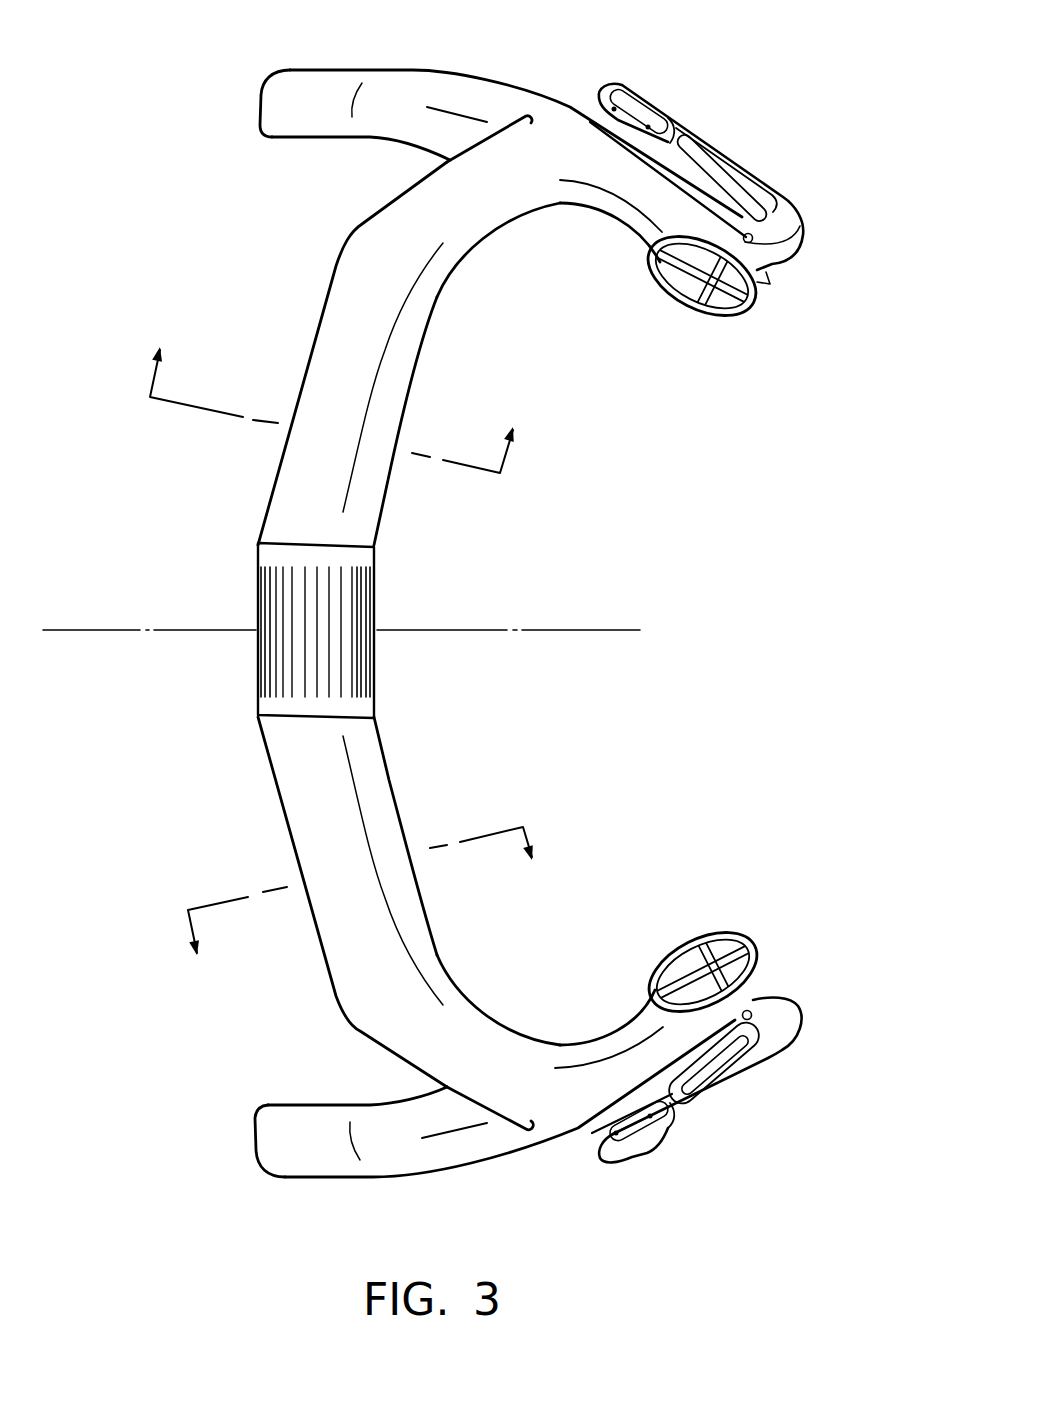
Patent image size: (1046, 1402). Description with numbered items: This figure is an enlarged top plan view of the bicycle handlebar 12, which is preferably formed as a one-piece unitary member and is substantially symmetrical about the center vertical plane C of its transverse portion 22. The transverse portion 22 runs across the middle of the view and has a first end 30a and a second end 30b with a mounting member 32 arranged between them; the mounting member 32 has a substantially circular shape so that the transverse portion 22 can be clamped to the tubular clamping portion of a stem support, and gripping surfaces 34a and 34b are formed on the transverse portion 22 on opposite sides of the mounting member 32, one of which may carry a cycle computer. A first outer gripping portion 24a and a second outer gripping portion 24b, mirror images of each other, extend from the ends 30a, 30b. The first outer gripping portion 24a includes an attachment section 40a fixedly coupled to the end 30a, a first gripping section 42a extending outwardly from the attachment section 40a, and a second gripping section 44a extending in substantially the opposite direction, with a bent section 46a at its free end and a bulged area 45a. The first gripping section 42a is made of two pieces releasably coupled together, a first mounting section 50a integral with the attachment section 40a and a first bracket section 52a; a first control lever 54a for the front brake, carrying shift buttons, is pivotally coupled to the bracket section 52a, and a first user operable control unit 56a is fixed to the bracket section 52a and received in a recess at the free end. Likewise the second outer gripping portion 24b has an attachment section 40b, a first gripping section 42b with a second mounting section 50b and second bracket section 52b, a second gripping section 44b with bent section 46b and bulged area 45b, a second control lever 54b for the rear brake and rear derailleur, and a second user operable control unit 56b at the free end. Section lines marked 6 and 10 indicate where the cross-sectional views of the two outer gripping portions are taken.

The bicycle handlebar 12 is at (197, 233).
The transverse portion 22 is at (278, 454).
The first outer gripping portion 24a is at (531, 88).
The second outer gripping portion 24b is at (507, 1163).
The first end of transverse portion 30a is at (340, 256).
The second end of transverse portion 30b is at (325, 970).
The mounting member 32 is at (256, 680).
The first gripping surface 34a is at (330, 372).
The second gripping surface 34b is at (318, 849).
The first attachment section 40a is at (512, 224).
The second attachment section 40b is at (507, 1023).
The first gripping section 42a is at (627, 230).
The first gripping section 42b is at (613, 1023).
The second gripping section 44a is at (403, 150).
The second gripping section 44b is at (407, 1080).
The bulged area 45a is at (442, 106).
The bulged area 45b is at (443, 1173).
The bent section 46a is at (300, 140).
The bent section 46b is at (293, 1107).
The first mounting section 50a is at (617, 203).
The second mounting section 50b is at (627, 1020).
The first bracket section 52a is at (760, 258).
The second bracket section 52b is at (636, 1130).
The first control lever 54a is at (778, 204).
The second control lever 54b is at (773, 1048).
The first user operable control unit 56a is at (732, 318).
The second user operable control unit 56b is at (722, 935).
The center vertical plane C is at (590, 630).
The section line 6- 6 is at (327, 409).
The section line 10- 10 is at (355, 886).